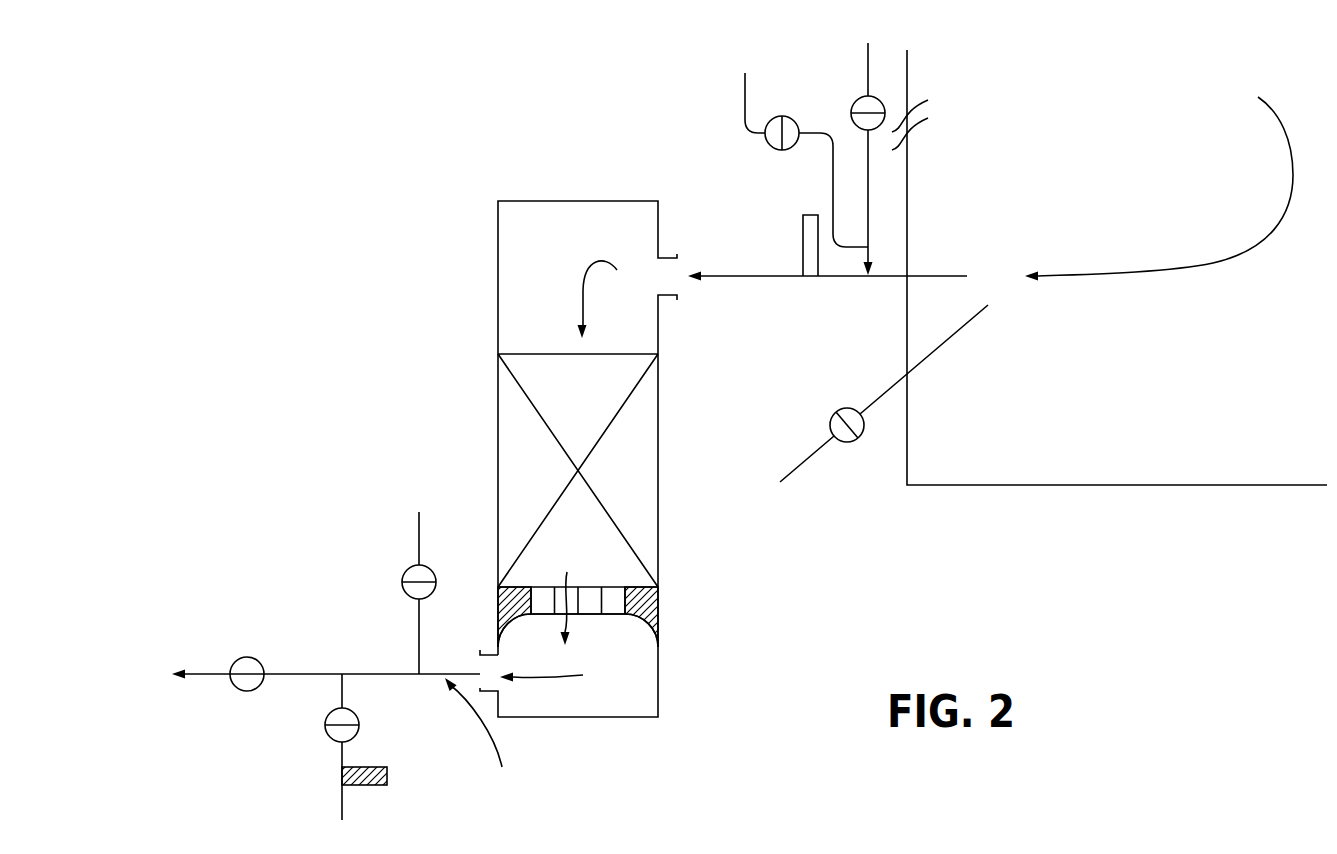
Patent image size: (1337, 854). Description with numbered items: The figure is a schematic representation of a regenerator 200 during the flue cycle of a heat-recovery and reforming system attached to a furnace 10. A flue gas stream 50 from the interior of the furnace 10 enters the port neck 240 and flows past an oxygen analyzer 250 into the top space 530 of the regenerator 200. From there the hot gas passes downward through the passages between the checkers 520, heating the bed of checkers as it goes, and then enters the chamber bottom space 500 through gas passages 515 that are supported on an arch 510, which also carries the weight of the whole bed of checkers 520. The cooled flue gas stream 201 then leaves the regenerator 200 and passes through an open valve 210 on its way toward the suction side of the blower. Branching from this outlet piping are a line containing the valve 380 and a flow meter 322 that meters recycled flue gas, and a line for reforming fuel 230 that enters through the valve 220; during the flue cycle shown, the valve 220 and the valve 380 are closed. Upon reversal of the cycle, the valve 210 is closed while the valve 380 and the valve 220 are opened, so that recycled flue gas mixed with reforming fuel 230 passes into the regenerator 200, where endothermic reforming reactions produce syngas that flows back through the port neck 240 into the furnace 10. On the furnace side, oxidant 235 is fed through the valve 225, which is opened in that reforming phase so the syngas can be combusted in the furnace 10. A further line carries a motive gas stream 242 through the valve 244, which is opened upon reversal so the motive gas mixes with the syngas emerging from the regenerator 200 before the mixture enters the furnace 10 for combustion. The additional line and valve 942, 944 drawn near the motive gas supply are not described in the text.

The furnace 10 is at (1225, 485).
The flue gas stream 50 is at (1171, 295).
The regenerator 200 is at (540, 201).
The cooled flue gas stream 201 is at (485, 736).
The valve 210 is at (250, 691).
The valve 220 is at (402, 586).
The valve 225 is at (850, 442).
The reforming fuel 230 is at (419, 532).
The oxidant 235 is at (795, 471).
The port neck 240 is at (848, 278).
The motive gas stream 242 is at (868, 56).
The valve 244 is at (852, 108).
The oxygen analyzer 250 is at (807, 215).
The flow meter 322 is at (375, 785).
The valve 380 is at (359, 718).
The chamber bottom space 500 is at (635, 704).
The arch 510 is at (645, 606).
The gas passages 515 is at (617, 587).
The checkers 520 is at (647, 486).
The top space 530 is at (551, 250).
The line 942 is at (745, 107).
The valve 944 is at (776, 148).